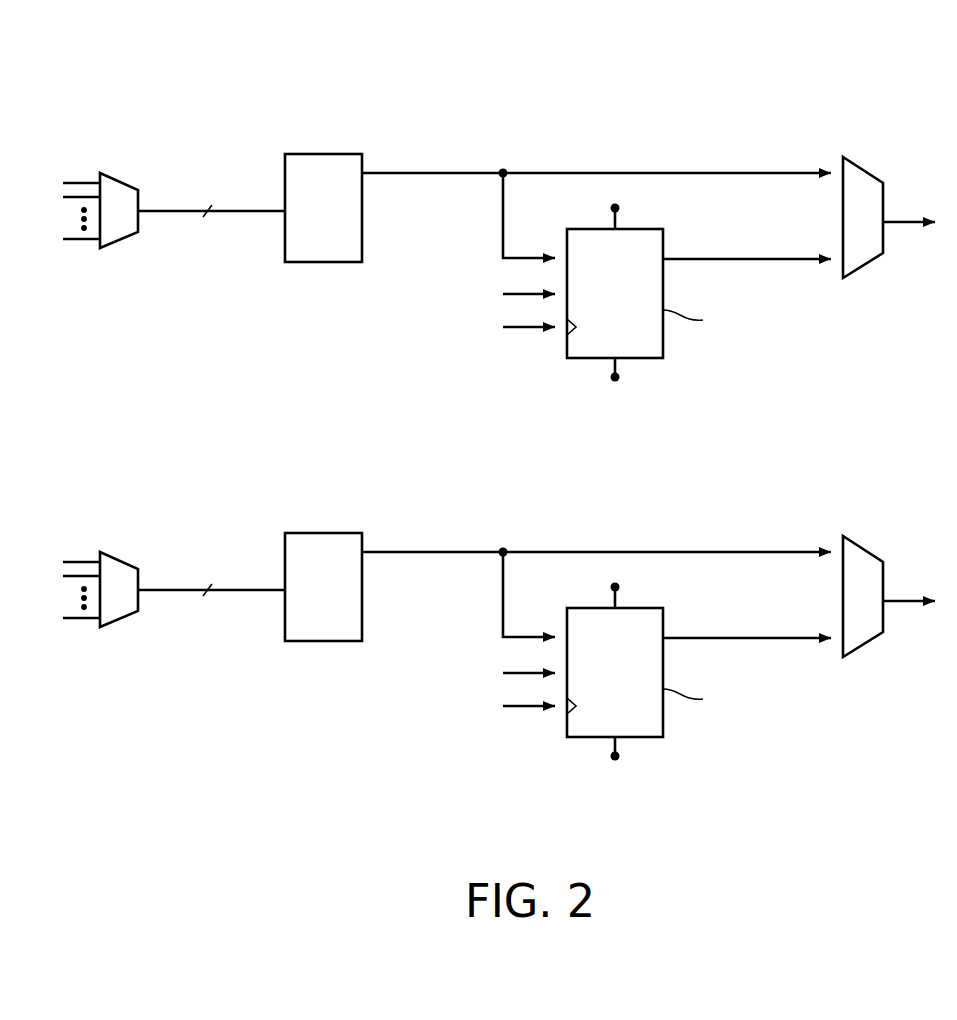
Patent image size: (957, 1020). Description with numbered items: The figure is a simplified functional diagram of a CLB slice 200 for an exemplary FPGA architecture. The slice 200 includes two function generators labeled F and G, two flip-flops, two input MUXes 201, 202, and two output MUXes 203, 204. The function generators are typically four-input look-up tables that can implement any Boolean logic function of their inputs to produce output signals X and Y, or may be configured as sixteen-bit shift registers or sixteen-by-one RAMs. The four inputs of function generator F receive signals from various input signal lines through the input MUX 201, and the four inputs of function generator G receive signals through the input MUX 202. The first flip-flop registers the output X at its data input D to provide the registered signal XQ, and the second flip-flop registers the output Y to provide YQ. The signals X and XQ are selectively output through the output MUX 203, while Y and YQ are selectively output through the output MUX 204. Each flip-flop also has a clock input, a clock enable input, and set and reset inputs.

The CLB slice 200 is at (206, 72).
The input MUX 201 is at (118, 180).
The input MUX 202 is at (109, 563).
The output MUX 203 is at (860, 170).
The output MUX 204 is at (872, 572).